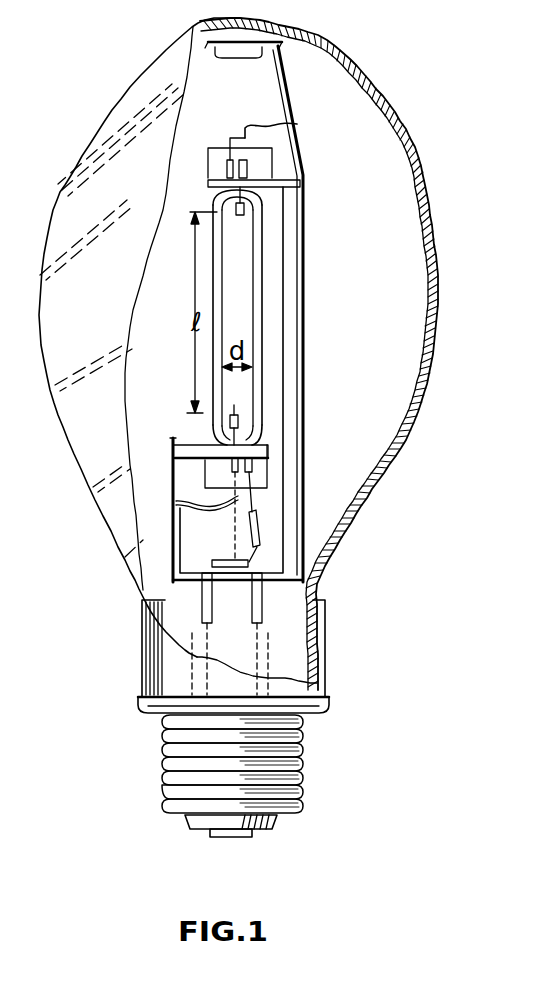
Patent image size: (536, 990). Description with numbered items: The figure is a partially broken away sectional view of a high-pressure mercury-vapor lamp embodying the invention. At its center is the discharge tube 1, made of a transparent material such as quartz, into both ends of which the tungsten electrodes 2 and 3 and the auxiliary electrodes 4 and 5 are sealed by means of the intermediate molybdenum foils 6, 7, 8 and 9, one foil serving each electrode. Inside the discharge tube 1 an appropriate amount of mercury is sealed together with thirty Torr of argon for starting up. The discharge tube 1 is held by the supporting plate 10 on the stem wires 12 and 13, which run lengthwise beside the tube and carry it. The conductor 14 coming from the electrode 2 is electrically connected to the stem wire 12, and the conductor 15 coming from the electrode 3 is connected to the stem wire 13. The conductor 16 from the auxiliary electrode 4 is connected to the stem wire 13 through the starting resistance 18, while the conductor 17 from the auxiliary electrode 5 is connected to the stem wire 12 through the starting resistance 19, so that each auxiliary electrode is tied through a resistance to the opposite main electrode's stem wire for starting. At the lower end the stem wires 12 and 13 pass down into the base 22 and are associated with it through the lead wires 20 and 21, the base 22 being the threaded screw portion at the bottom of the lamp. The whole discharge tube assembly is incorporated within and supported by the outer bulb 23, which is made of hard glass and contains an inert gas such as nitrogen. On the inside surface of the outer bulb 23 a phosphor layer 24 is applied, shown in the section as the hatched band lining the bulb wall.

The discharge tube 1 is at (216, 266).
The electrode 2 is at (228, 424).
The electrode 3 is at (250, 209).
The auxiliary electrode 4 is at (250, 421).
The auxiliary electrode 5 is at (214, 198).
The molybdenum foil 6 is at (232, 466).
The molybdenum foil 7 is at (247, 165).
The molybdenum foil 8 is at (253, 466).
The molybdenum foil 9 is at (227, 160).
The supporting plate 10 is at (263, 455).
The stem wire 12 is at (154, 510).
The stem wire 13 is at (306, 184).
The conductor 14 is at (203, 507).
The conductor 15 is at (270, 124).
The conductor 16 is at (253, 503).
The conductor 17 is at (285, 377).
The starting resistance 18 is at (260, 528).
The starting resistance 19 is at (241, 556).
The lead wire 20 is at (208, 637).
The lead wire 21 is at (256, 640).
The base 22 is at (300, 760).
The outer bulb 23 is at (438, 250).
The phosphor layer 24 is at (423, 255).